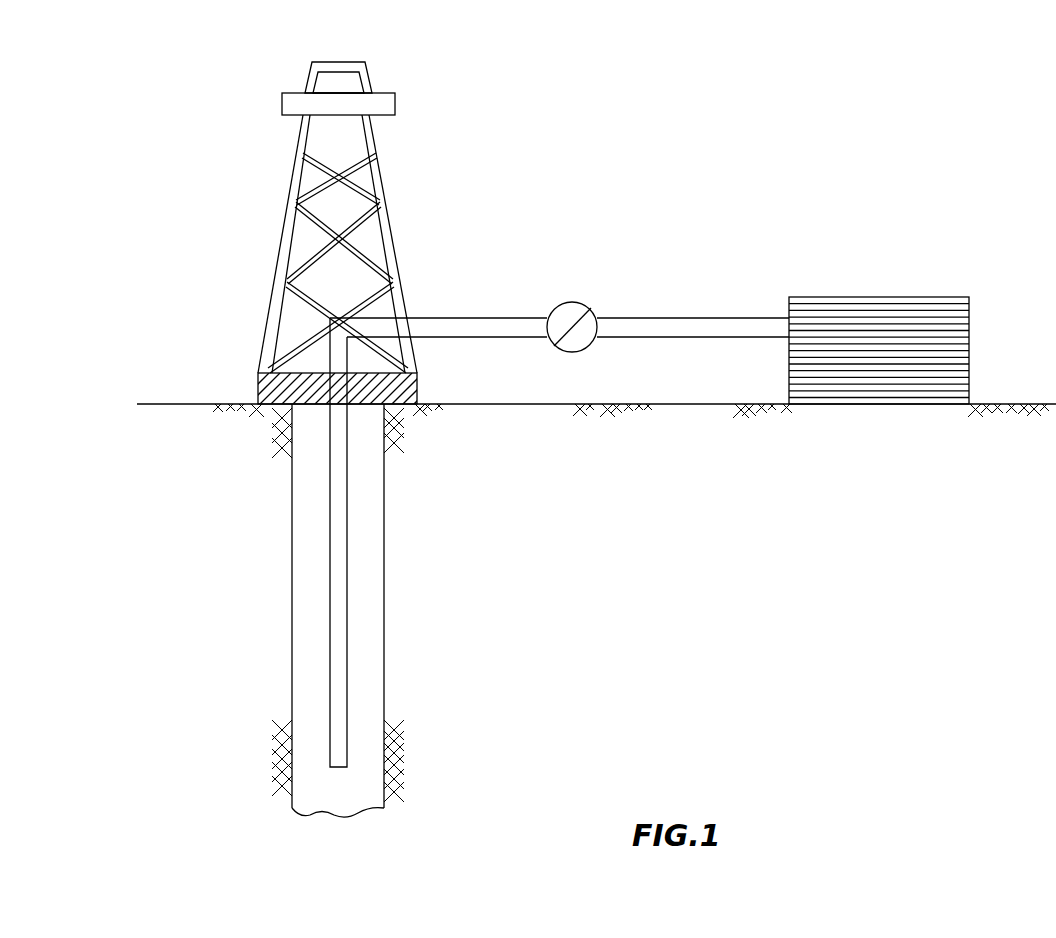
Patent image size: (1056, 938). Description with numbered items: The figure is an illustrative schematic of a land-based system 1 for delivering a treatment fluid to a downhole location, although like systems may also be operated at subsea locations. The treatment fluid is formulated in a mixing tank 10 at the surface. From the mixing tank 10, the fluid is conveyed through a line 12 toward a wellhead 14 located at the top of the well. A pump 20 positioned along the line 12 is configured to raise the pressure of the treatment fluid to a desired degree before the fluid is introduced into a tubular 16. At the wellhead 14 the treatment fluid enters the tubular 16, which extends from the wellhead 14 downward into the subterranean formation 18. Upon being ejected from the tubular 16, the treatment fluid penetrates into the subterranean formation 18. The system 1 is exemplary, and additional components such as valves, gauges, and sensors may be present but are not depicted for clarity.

The system 1 is at (138, 98).
The mixing tank 10 is at (958, 297).
The line 12 is at (480, 318).
The wellhead 14 is at (258, 387).
The tubular 16 is at (347, 527).
The subterranean formation 18 is at (214, 624).
The pump 20 is at (580, 305).